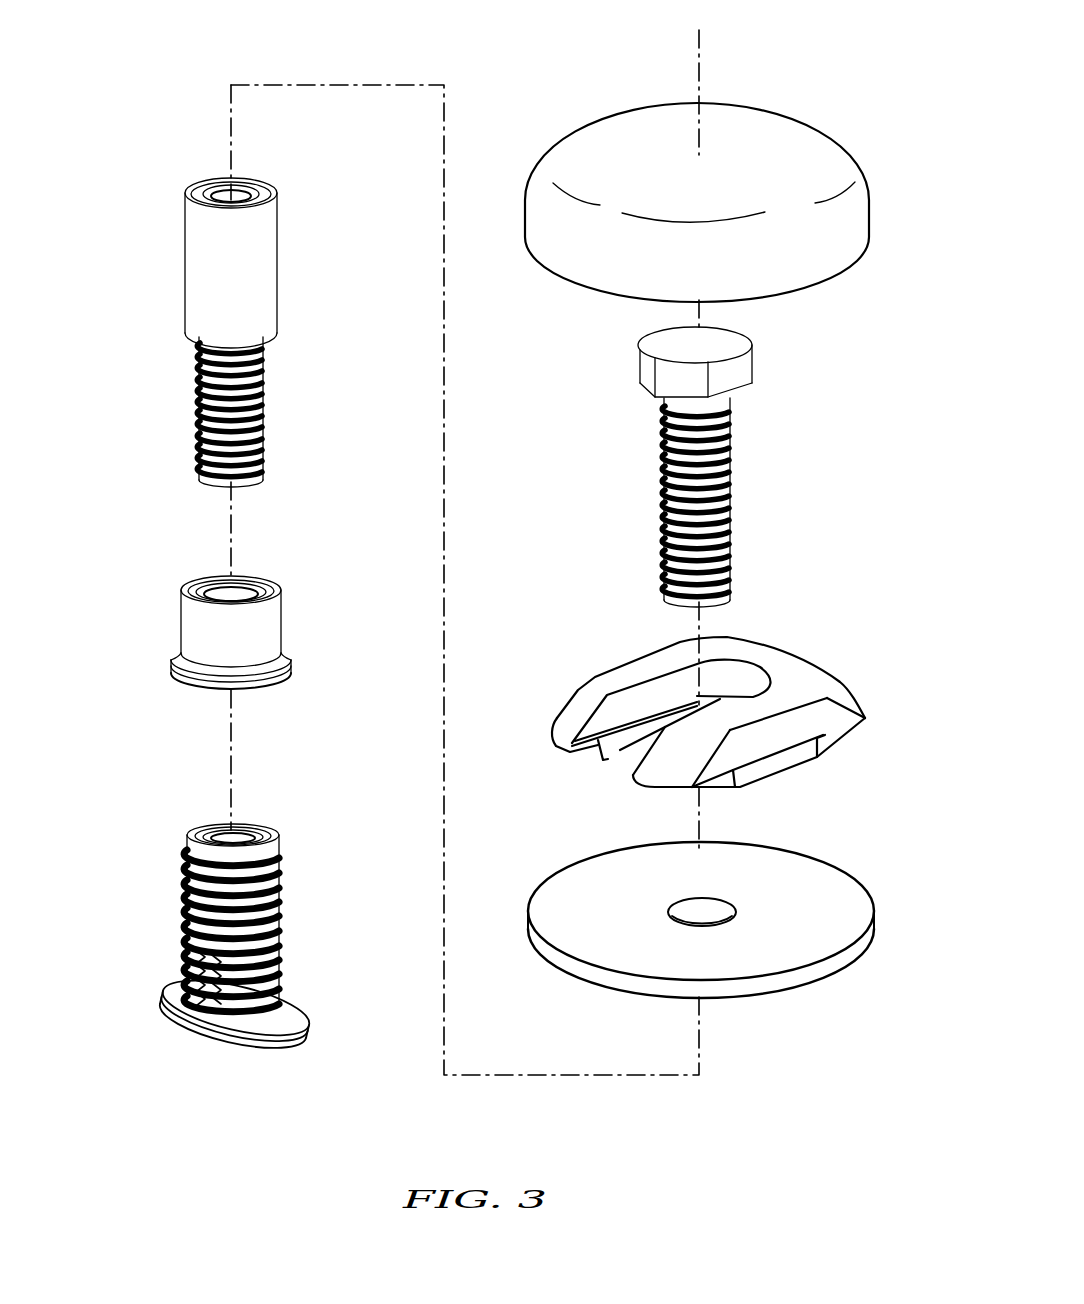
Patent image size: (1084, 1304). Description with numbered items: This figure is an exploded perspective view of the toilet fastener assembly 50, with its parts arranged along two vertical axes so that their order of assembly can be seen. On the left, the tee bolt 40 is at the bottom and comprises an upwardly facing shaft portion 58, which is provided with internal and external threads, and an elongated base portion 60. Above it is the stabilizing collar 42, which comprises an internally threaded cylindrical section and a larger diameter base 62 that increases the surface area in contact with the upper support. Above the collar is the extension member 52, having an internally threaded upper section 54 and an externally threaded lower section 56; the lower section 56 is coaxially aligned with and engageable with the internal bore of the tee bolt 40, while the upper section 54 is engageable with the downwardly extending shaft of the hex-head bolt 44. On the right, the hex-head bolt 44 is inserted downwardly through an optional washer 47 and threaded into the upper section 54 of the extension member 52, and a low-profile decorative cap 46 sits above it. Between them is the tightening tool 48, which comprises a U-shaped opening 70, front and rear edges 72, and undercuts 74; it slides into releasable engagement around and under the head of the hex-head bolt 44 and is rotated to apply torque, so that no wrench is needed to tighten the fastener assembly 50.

The tee bolt 40 is at (290, 917).
The stabilizing collar 42 is at (270, 627).
The hex-head bolt 44 is at (733, 380).
The low-profile decorative cap 46 is at (788, 130).
The washer 47 is at (820, 880).
The tightening tool 48 is at (792, 643).
The fastener assembly 50 is at (310, 62).
The extension member 52 is at (175, 327).
The internally threaded upper section 54 is at (265, 250).
The externally threaded lower section 56 is at (257, 363).
The shaft portion 58 is at (195, 917).
The base portion 60 is at (247, 1040).
The base 62 is at (190, 683).
The U-shaped opening 70 is at (623, 708).
The front and rear edges 72 is at (858, 692).
The undercuts 74 is at (592, 757).